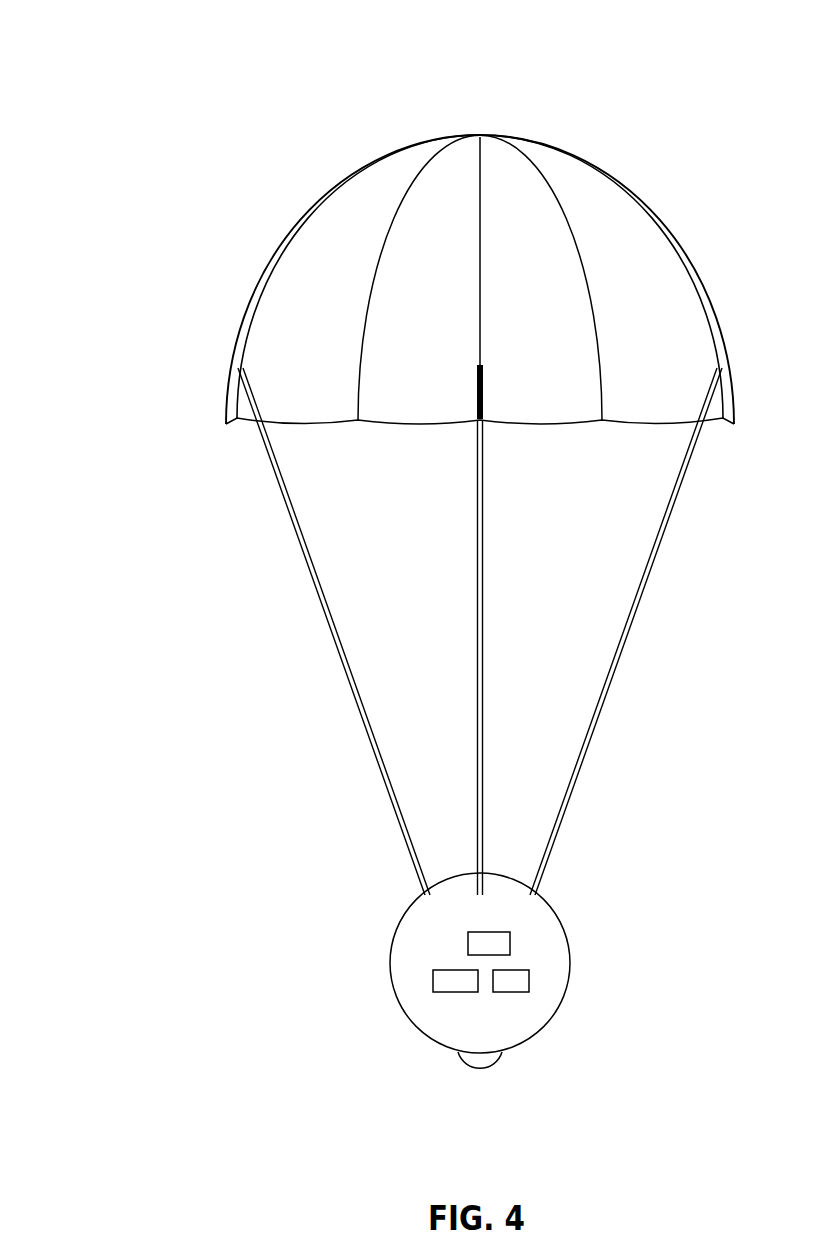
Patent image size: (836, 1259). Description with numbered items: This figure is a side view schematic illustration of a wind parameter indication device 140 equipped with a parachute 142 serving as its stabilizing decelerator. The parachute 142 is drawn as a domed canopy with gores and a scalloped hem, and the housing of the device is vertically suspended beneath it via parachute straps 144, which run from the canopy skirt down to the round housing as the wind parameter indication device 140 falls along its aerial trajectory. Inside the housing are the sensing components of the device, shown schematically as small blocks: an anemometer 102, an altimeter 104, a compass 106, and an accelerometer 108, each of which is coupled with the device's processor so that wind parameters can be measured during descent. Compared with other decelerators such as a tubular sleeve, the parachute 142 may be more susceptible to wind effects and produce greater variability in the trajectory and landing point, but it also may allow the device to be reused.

The wind parameter indication device 140 is at (143, 33).
The parachute 142 is at (240, 322).
The parachute straps 144 is at (307, 552).
The anemometer 102 is at (462, 1055).
The altimeter 104 is at (478, 978).
The compass 106 is at (510, 942).
The accelerometer 108 is at (529, 981).